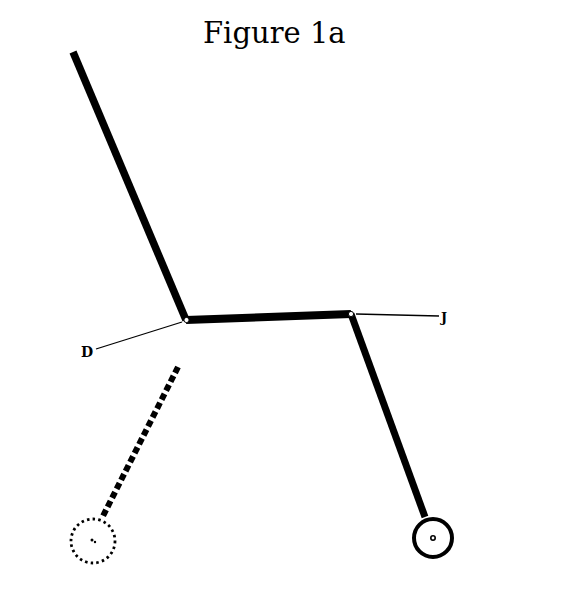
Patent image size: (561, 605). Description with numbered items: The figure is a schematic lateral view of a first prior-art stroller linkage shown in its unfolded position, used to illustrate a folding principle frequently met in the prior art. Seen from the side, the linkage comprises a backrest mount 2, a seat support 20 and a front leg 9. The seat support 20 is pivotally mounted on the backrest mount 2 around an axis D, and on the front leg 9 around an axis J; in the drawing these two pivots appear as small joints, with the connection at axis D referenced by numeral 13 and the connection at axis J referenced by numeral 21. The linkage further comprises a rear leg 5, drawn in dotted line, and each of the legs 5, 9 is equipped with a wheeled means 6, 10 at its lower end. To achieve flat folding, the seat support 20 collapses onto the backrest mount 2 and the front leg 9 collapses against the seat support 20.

The backrest mount 2 is at (119, 169).
The seat support 20 is at (278, 309).
The front leg 9 is at (390, 428).
The wheeled means 10 is at (454, 534).
The rear leg 5 is at (152, 420).
The wheeled means 6 is at (78, 522).
The joint D 13 is at (183, 320).
The joint J 21 is at (353, 311).